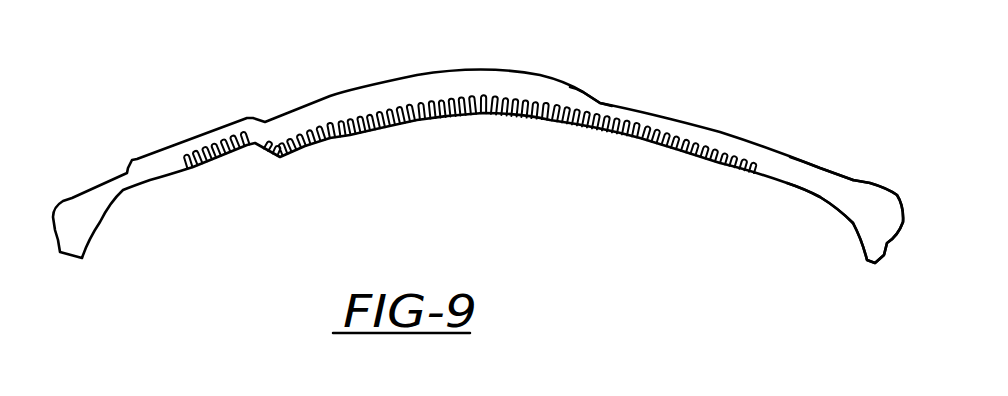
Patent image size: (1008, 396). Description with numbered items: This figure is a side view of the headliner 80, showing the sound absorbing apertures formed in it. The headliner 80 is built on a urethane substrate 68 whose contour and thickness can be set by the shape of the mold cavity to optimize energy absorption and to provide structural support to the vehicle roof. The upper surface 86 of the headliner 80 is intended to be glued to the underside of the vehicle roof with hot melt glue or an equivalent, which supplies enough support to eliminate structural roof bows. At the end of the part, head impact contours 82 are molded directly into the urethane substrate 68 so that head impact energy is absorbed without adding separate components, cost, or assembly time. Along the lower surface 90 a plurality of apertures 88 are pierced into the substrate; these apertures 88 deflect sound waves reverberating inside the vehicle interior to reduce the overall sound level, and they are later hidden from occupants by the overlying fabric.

The headliner 80 is at (797, 113).
The upper surface 86 is at (582, 90).
The apertures 88 is at (655, 145).
The urethane substrate 68 is at (823, 170).
The head impact contours 82 is at (902, 197).
The lower surface 90 is at (808, 190).